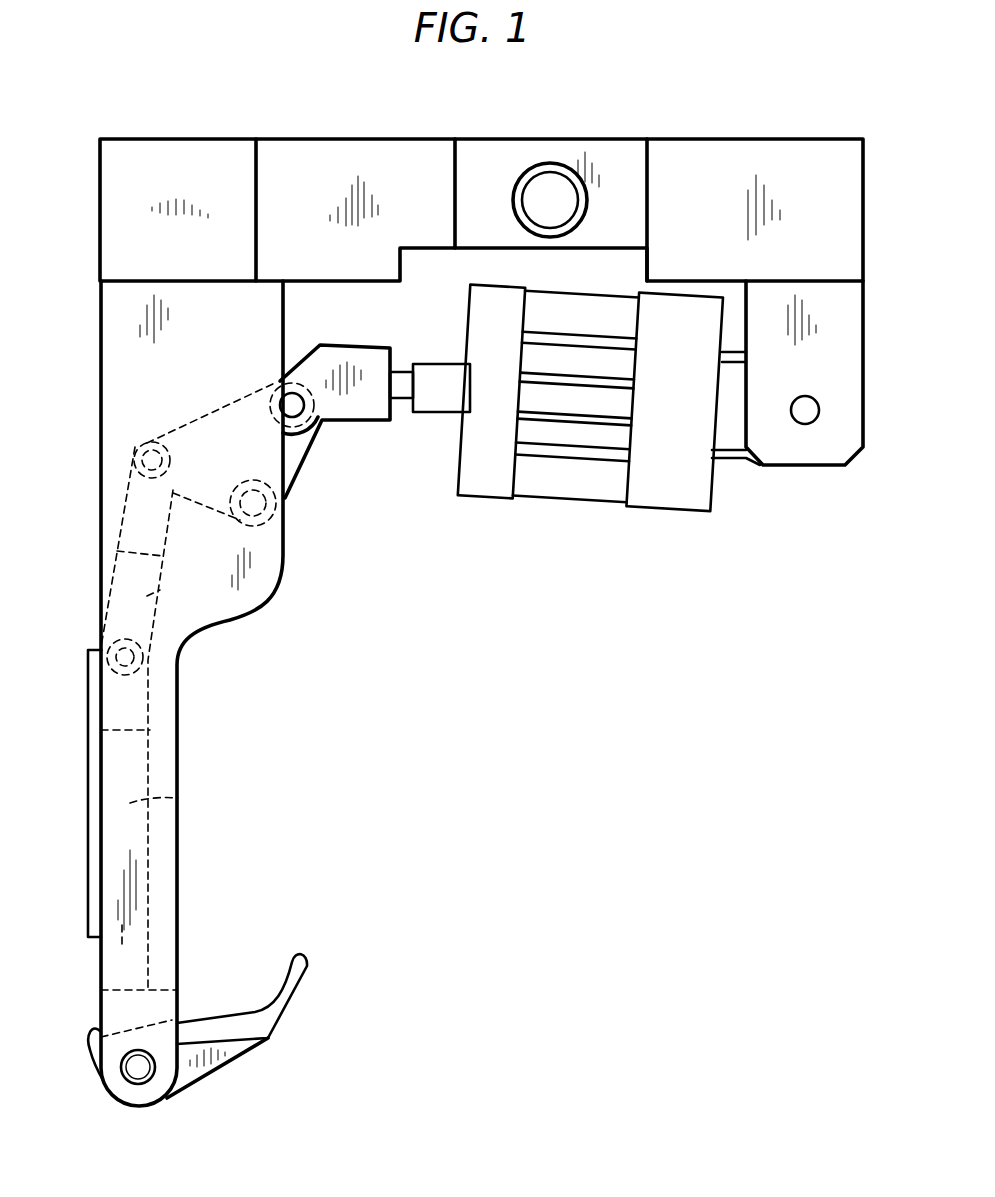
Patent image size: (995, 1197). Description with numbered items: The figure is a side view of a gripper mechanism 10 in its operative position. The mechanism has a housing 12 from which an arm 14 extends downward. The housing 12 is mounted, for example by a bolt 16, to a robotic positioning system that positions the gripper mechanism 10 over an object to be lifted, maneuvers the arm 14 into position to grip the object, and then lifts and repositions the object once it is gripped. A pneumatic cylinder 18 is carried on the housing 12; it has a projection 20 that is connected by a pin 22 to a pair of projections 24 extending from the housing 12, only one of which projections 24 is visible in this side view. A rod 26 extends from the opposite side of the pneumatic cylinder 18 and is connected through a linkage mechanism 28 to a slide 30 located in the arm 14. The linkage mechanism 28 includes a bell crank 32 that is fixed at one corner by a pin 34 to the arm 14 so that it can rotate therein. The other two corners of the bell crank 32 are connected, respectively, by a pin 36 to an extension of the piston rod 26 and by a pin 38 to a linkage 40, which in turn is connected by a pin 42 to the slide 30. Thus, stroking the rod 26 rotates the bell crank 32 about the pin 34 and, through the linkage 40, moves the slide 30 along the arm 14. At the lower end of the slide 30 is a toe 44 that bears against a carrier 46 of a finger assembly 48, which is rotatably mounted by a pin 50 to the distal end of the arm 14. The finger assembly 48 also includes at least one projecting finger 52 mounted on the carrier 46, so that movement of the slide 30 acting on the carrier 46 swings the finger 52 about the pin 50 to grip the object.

The gripper mechanism 10 is at (523, 663).
The housing 12 is at (211, 153).
The arm 14 is at (117, 367).
The bolt 16 is at (552, 188).
The pneumatic cylinder 18 is at (567, 481).
The projection 20 is at (730, 432).
The pin 22 is at (806, 415).
The projections 24 is at (847, 347).
The rod 26 is at (398, 386).
The linkage mechanism 28 is at (212, 400).
The slide 30 is at (178, 805).
The bell crank 32 is at (313, 448).
The pin 34 is at (294, 522).
The pin 36 is at (287, 392).
The pin 38 is at (154, 442).
The linkage 40 is at (170, 588).
The pin 42 is at (92, 677).
The toe 44 is at (100, 1005).
The carrier 46 is at (96, 1056).
The finger assembly 48 is at (222, 1080).
The pin 50 is at (138, 1072).
The finger 52 is at (280, 1000).